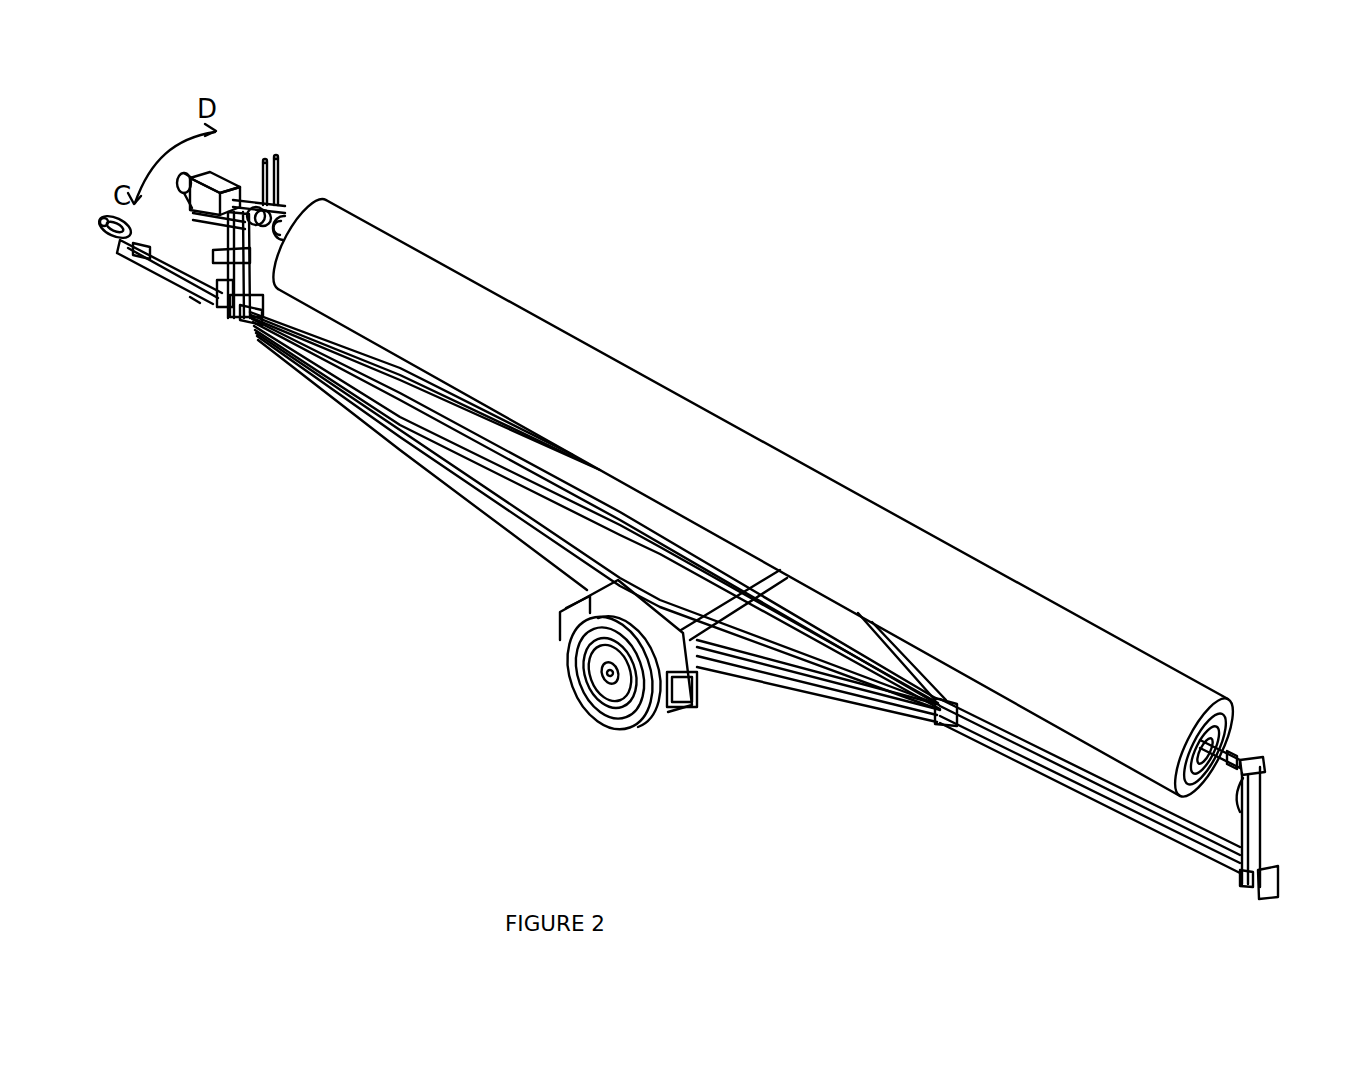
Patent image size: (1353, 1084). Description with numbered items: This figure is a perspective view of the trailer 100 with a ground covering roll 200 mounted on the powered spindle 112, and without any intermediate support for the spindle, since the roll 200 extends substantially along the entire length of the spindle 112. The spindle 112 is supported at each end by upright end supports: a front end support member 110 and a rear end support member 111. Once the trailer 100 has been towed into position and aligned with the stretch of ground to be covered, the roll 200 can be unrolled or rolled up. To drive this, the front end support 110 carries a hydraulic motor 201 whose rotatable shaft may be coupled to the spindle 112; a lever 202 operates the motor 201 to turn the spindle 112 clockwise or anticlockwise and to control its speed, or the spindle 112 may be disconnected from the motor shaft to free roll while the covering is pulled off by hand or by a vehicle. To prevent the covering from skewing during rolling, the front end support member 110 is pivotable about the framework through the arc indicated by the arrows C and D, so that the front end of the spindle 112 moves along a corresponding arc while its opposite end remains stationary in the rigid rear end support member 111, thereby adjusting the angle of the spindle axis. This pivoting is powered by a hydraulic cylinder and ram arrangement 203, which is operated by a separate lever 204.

The trailer 100 is at (1090, 246).
The front end support member 110 is at (233, 167).
The rear end support member 111 is at (1271, 752).
The spindle 112 is at (1226, 753).
The ground covering roll 200 is at (762, 478).
The hydraulic motor 201 is at (183, 186).
The lever 202 is at (281, 160).
The hydraulic cylinder and ram arrangement 203 is at (220, 320).
The lever 204 is at (265, 165).